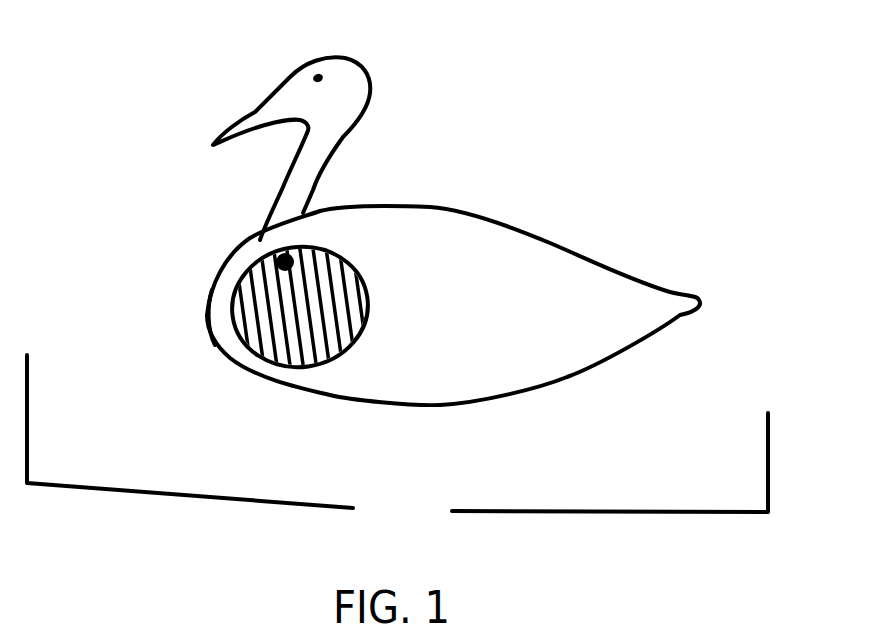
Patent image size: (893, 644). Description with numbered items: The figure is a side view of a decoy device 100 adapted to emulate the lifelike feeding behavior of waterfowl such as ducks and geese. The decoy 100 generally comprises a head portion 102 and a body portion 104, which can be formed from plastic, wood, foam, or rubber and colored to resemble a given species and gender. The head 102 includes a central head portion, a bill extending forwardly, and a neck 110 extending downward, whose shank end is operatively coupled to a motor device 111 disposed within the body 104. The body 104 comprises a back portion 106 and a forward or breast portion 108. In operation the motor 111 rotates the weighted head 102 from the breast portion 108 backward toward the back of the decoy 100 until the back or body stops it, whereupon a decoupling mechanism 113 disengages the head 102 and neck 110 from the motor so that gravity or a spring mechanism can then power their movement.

The decoy device 100 is at (397, 447).
The head portion 102 is at (363, 73).
The body portion 104 is at (478, 333).
The back portion 106 is at (453, 268).
The breast portion 108 is at (210, 318).
The neck 110 is at (313, 192).
The motor device 111 is at (330, 357).
The decoupling mechanism 113 is at (285, 262).